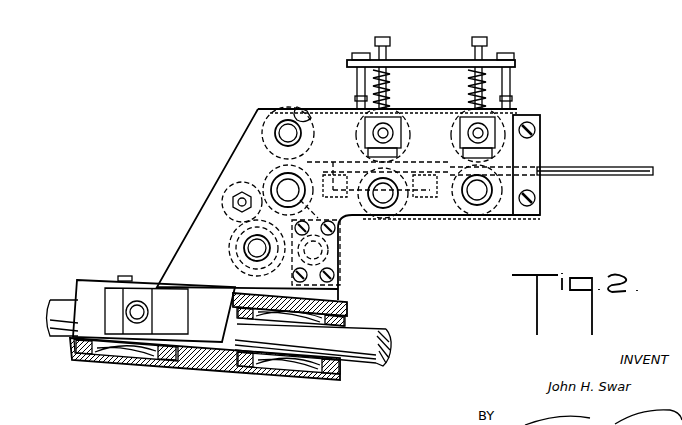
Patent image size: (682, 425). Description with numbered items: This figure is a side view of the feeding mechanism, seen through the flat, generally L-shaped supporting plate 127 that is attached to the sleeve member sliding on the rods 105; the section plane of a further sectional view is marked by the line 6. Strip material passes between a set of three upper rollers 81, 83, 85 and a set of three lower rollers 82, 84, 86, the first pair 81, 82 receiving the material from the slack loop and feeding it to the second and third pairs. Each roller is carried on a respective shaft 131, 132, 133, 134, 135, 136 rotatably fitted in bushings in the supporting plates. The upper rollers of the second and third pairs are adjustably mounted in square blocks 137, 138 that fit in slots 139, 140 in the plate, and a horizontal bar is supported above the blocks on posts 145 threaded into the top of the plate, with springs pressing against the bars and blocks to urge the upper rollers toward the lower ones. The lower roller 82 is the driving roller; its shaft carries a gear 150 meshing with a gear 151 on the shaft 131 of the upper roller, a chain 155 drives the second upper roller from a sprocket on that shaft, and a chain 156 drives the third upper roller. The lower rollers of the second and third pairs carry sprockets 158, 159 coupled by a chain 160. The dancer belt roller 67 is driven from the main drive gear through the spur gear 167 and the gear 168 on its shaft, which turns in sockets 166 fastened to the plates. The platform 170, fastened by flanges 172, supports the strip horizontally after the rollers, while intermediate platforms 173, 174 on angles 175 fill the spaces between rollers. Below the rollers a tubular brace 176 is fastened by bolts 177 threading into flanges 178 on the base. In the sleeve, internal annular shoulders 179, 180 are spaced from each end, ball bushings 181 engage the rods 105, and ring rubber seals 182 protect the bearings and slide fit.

The section line 6- 6 is at (341, 94).
The dancer belt roller 67 is at (232, 232).
The upper roller of first pair 81 is at (300, 107).
The lower driving roller 82 is at (357, 217).
The upper roller of second pair 83 is at (417, 112).
The lower roller of second pair 84 is at (383, 195).
The upper roller of third pair 85 is at (508, 110).
The lower roller of third pair 86 is at (461, 220).
The rods 105 is at (373, 333).
The supporting plate 127 is at (257, 111).
The shaft of upper roller 81 131 is at (285, 133).
The shaft of roller 82 132 is at (252, 169).
The shaft of roller 83 133 is at (396, 110).
The shaft of roller 84 134 is at (395, 252).
The shaft of roller 85 135 is at (410, 118).
The shaft of roller 86 136 is at (480, 190).
The block 137 is at (365, 124).
The block 138 is at (495, 127).
The slot 139 is at (404, 146).
The slot 140 is at (498, 160).
The post 145 is at (476, 46).
The gear 150 is at (271, 170).
The gear 151 is at (261, 108).
The chain 155 is at (322, 103).
The chain 156 is at (478, 128).
The sprocket 158 is at (438, 217).
The sprocket 159 is at (497, 220).
The chain 160 is at (449, 271).
The sockets 166 is at (229, 249).
The spur gear 167 is at (232, 201).
The gear 168 is at (236, 260).
The platform 170 is at (630, 166).
The flanges 172 is at (513, 219).
The intermediate platform 173 is at (333, 162).
The intermediate platform 174 is at (428, 163).
The angles 175 is at (450, 220).
The tubular brace 176 is at (338, 258).
The bolts 177 is at (334, 276).
The flanges 178 is at (340, 290).
The internal annular shoulder 179 is at (147, 367).
The internal annular shoulder 180 is at (248, 367).
The ball bushings 181 is at (280, 360).
The ring rubber seals 182 is at (325, 373).